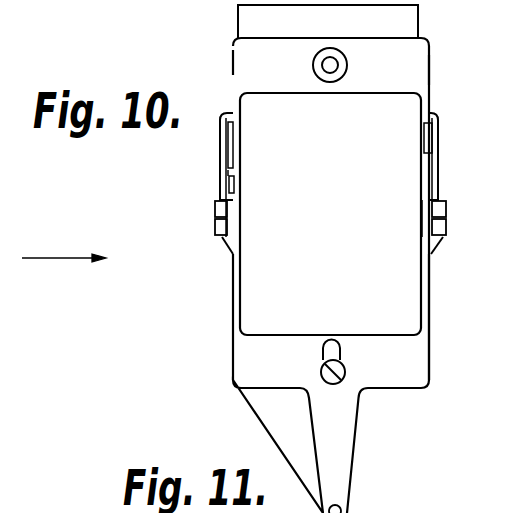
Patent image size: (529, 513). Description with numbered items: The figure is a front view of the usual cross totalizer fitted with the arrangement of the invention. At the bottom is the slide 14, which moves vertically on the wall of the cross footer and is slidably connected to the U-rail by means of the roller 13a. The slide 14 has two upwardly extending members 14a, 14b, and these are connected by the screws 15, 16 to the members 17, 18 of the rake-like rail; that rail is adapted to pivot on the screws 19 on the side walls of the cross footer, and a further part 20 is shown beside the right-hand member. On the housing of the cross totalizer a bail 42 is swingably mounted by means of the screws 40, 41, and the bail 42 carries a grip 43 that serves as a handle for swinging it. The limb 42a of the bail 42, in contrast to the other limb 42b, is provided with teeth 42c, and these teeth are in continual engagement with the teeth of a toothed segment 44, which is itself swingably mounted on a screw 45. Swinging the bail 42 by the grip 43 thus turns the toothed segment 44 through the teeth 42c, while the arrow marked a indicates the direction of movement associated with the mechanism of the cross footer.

The housing / direction of movement a is at (412, 25).
The bail 42 is at (233, 46).
The limb of the bail 42a is at (236, 62).
The other limb of the bail 42b is at (427, 70).
The teeth 42c is at (237, 138).
The grip 43 is at (348, 64).
The screw 40 is at (230, 133).
The screw 41 is at (436, 125).
The toothed segment 44 is at (238, 180).
The screw 45 is at (232, 190).
The screw 15 is at (219, 210).
The screw 16 is at (443, 210).
The member of the rake-like rail 17 is at (237, 222).
The member of the rake-like rail 18 is at (430, 213).
The screw 19 is at (223, 236).
The right bent portion 20 is at (442, 232).
The slide 14 is at (350, 427).
The upwardly extending member 14a is at (238, 310).
The upwardly extending member 14b is at (429, 297).
The roller 13a is at (341, 510).